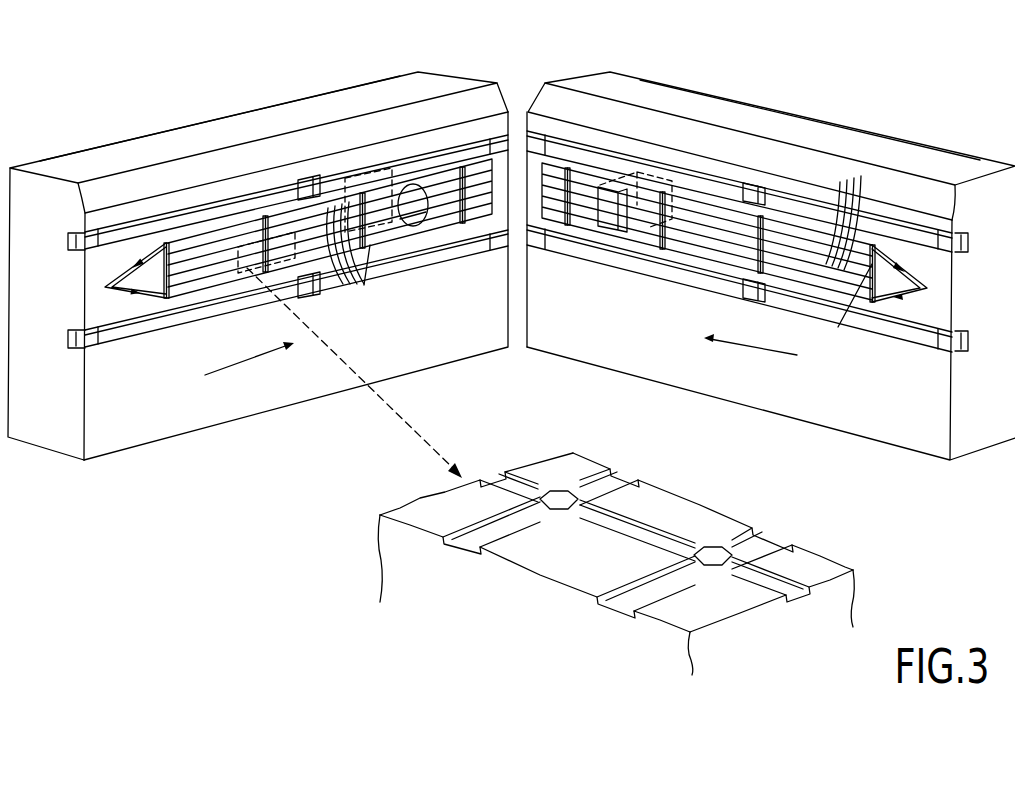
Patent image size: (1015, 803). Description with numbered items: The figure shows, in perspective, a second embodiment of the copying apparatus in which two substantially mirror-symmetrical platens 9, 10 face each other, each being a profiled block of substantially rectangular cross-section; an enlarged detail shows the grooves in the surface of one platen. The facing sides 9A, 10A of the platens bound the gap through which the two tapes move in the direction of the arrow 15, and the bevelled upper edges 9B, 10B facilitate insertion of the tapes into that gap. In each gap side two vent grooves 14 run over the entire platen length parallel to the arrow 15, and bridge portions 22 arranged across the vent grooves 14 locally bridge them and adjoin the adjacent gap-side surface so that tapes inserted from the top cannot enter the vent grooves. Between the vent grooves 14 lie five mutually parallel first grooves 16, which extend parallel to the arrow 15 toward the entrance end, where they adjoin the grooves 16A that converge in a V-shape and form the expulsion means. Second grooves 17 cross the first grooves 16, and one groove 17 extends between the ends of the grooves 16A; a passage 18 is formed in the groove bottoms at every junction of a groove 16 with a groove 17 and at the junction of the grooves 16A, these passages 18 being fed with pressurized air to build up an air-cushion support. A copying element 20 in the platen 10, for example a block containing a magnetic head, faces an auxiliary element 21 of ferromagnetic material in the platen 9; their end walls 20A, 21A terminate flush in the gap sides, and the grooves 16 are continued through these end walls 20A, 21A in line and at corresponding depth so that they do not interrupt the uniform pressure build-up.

In FIG. 3, the platen 9 is at (188, 138).
In FIG. 3A, the platen 9 is at (708, 642).
In FIG. 3, the gap side of platen 9 9A is at (425, 355).
In FIG. 3A, the gap side of platen 9 9A is at (745, 603).
In FIG. 3, the bevelled upper edge of platen 9 9B is at (337, 130).
In FIG. 3, the platen 10 is at (724, 126).
In FIG. 3, the gap side of platen 10 10A is at (577, 352).
In FIG. 3, the bevelled upper edge of platen 10 10B is at (790, 155).
In FIG. 3, the vent grooves 14 is at (70, 240).
In FIG. 3, the arrow 15 is at (501, 362).
In FIG. 3, the first grooves 16 is at (520, 239).
In FIG. 3A, the first grooves 16 is at (513, 523).
In FIG. 3, the V-shaped converging grooves 16A is at (130, 272).
In FIG. 3, the second grooves 17 is at (615, 298).
In FIG. 3A, the second grooves 17 is at (648, 527).
In FIG. 3, the passages 18 is at (165, 243).
In FIG. 3A, the passages 18 is at (566, 499).
In FIG. 3, the copying element 20 is at (647, 170).
In FIG. 3, the end wall of copying element 20A is at (620, 226).
In FIG. 3, the auxiliary element 21 is at (413, 196).
In FIG. 3, the end wall of auxiliary element 21A is at (413, 220).
In FIG. 3, the bridge portions 22 is at (308, 182).